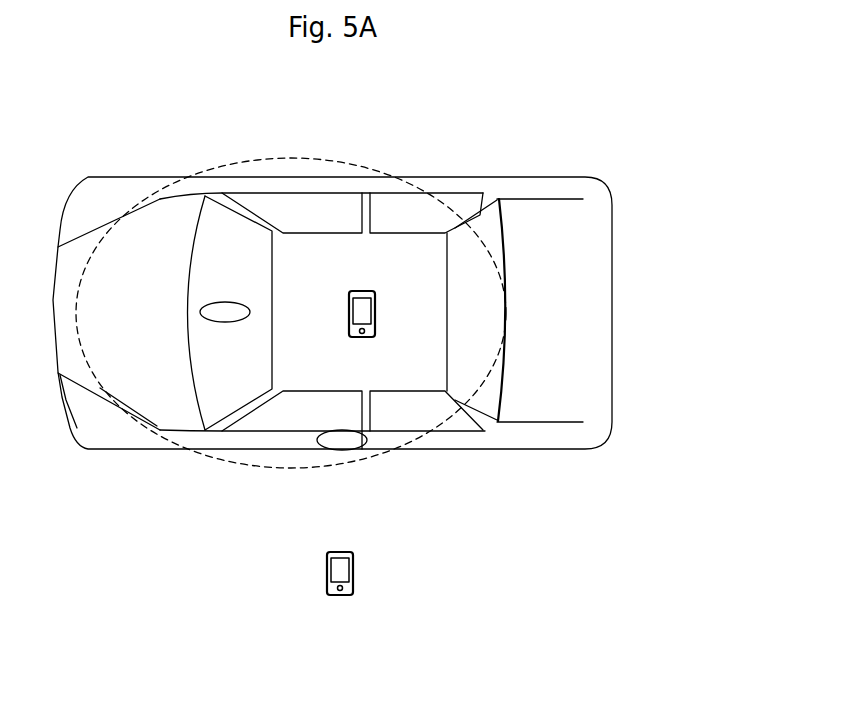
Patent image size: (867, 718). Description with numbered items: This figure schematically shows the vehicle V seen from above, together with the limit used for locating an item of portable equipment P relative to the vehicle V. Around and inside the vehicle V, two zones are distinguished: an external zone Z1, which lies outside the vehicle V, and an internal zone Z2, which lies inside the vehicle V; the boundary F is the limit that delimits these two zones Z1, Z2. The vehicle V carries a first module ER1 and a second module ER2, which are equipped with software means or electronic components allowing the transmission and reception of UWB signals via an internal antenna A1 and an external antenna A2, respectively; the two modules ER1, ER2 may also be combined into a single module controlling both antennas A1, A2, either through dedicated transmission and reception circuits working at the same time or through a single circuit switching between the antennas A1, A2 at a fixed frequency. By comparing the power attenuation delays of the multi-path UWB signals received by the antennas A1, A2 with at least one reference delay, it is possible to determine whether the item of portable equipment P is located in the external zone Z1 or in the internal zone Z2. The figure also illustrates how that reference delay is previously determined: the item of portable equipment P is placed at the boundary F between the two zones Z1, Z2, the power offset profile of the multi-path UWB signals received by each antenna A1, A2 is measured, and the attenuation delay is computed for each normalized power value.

The vehicle V is at (615, 165).
The boundary F is at (167, 450).
The item of portable equipment P is at (365, 291).
The external zone Z1 is at (340, 562).
The internal zone Z2 is at (363, 168).
The second module ER2 is at (337, 212).
The external antenna A2 is at (220, 312).
The first module ER1 is at (460, 496).
The internal antenna A1 is at (345, 437).